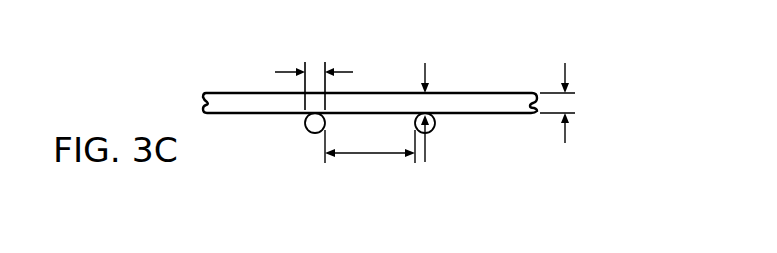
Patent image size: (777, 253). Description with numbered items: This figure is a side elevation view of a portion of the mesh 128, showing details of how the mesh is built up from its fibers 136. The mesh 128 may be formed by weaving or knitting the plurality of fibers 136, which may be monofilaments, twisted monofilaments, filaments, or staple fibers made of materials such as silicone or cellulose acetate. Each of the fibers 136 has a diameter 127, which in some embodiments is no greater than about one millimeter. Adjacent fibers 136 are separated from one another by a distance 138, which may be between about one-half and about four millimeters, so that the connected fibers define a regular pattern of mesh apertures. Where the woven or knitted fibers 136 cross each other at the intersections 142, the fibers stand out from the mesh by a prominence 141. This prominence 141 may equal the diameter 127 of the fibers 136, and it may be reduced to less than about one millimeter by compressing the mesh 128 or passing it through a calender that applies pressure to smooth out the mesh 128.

The mesh 128 is at (523, 46).
The diameter 127 is at (278, 72).
The intersections 142 is at (313, 104).
The prominence 141 is at (427, 72).
The fibers 136 is at (476, 100).
The distance 138 is at (369, 156).